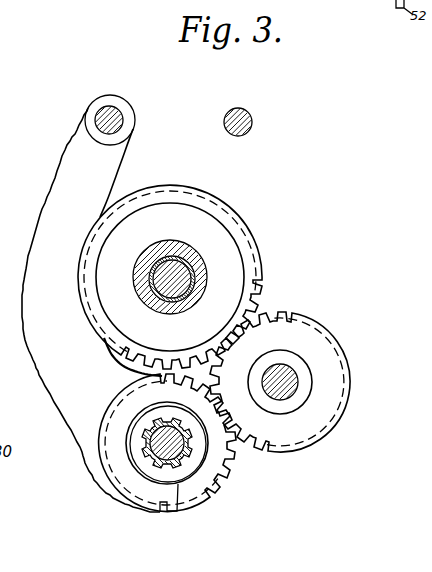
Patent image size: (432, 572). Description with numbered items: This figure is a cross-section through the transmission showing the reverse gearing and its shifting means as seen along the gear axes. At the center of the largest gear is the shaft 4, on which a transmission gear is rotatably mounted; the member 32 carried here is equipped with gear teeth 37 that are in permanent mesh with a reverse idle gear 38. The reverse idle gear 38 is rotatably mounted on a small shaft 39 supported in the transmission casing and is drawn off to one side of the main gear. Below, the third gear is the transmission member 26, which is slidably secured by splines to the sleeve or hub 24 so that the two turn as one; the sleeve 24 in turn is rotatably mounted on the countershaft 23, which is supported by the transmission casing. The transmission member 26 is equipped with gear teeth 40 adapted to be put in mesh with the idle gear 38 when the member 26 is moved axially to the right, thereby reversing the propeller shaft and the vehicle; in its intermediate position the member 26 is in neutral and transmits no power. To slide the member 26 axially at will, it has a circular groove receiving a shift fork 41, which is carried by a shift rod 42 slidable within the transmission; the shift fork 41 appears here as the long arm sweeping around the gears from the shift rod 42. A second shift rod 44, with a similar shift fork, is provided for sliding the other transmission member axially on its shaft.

The shaft 4 is at (180, 263).
The countershaft 23 is at (161, 460).
The sleeve or hub 24 is at (146, 457).
The transmission member 26 is at (178, 511).
The member 32 is at (191, 277).
The gear teeth 37 is at (266, 289).
The reverse idle gear 38 is at (275, 447).
The small shaft 39 is at (296, 386).
The gear teeth 40 is at (227, 477).
The shift fork 41 is at (54, 193).
The shift rod 42 is at (115, 112).
The shift rod 44 is at (252, 122).